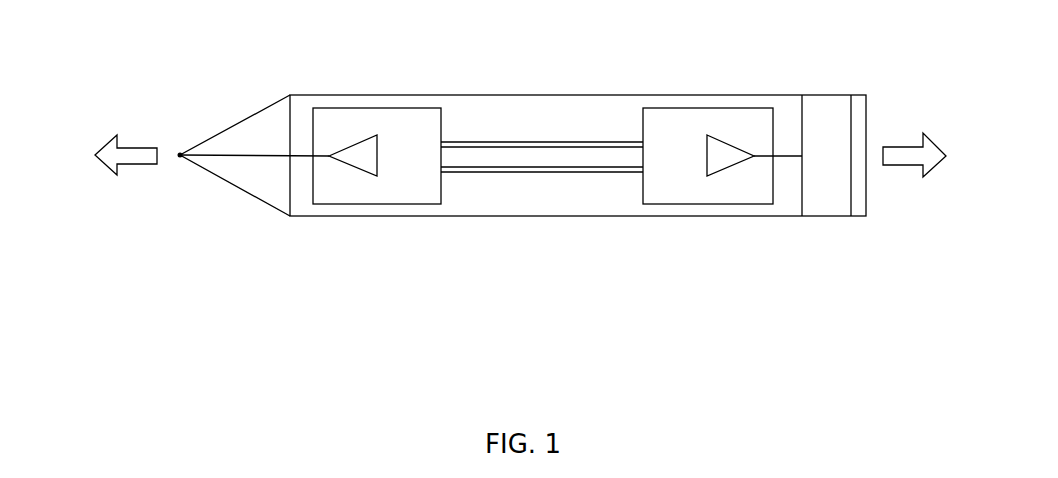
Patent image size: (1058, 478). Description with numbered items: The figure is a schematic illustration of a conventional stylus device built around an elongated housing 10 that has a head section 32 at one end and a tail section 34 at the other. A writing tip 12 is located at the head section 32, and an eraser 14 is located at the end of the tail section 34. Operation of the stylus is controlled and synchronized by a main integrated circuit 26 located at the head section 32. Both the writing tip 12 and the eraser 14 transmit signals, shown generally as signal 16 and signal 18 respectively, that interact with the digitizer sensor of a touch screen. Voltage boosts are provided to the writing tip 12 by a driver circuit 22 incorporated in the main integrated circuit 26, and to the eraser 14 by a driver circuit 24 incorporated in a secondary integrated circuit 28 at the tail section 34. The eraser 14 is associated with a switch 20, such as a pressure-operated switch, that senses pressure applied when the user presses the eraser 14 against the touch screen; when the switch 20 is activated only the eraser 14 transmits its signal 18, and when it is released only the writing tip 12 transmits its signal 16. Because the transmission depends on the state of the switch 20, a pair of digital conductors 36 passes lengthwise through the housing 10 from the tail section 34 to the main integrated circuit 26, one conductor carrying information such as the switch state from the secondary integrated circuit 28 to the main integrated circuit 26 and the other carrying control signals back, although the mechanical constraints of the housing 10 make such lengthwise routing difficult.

The elongated housing 10 is at (510, 95).
The writing tip 12 is at (248, 175).
The eraser 14 is at (822, 205).
The signal of the writing tip 16 is at (98, 158).
The signal of the eraser 18 is at (903, 158).
The switch 20 is at (860, 205).
The driver circuit 22 is at (342, 160).
The driver circuit 24 is at (718, 157).
The main integrated circuit 26 is at (389, 195).
The secondary integrated circuit 28 is at (670, 195).
The head section 32 is at (460, 310).
The tail section 34 is at (593, 310).
The digital conductors 36 is at (527, 193).